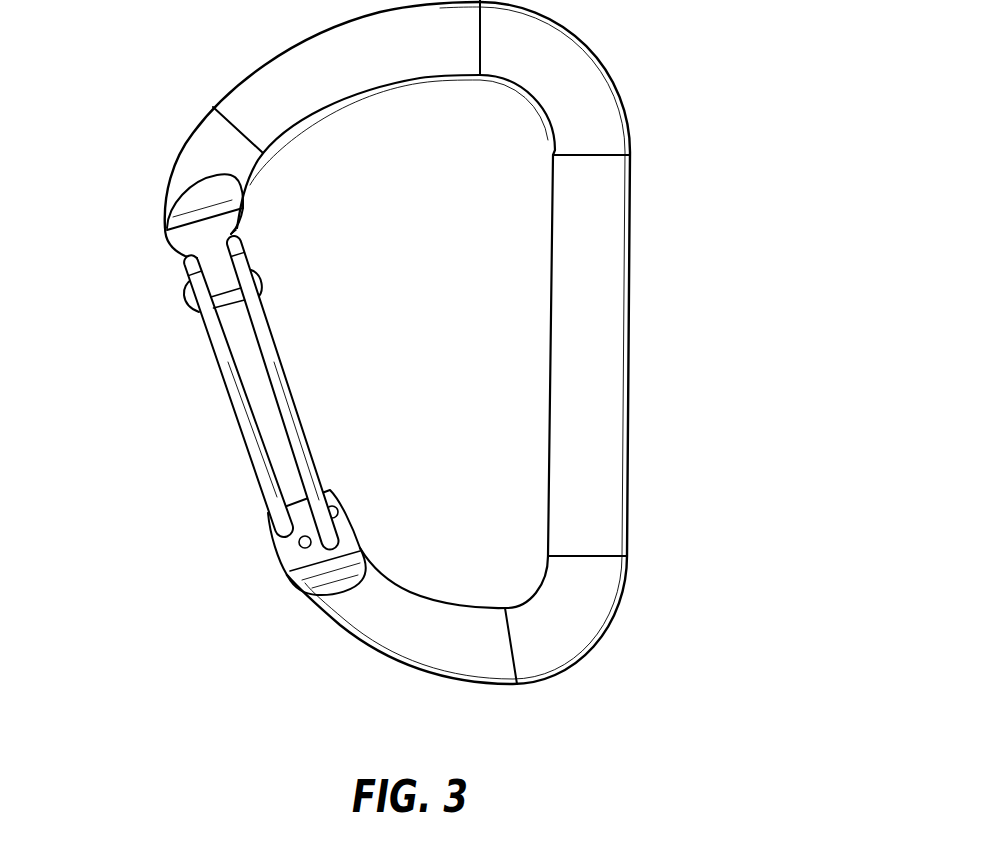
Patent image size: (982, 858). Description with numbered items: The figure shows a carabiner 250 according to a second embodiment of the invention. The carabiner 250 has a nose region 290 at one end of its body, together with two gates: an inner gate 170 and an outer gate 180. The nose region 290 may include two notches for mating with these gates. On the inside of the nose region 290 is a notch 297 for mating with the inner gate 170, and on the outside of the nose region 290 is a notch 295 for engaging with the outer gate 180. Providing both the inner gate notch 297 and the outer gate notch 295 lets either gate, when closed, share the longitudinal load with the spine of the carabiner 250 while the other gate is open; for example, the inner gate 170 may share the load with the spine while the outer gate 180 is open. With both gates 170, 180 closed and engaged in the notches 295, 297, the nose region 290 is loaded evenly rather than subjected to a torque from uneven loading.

The carabiner 250 is at (768, 250).
The nose region 290 is at (163, 315).
The notch 295 is at (178, 248).
The notch 297 is at (242, 227).
The inner gate 170 is at (270, 358).
The outer gate 180 is at (237, 402).